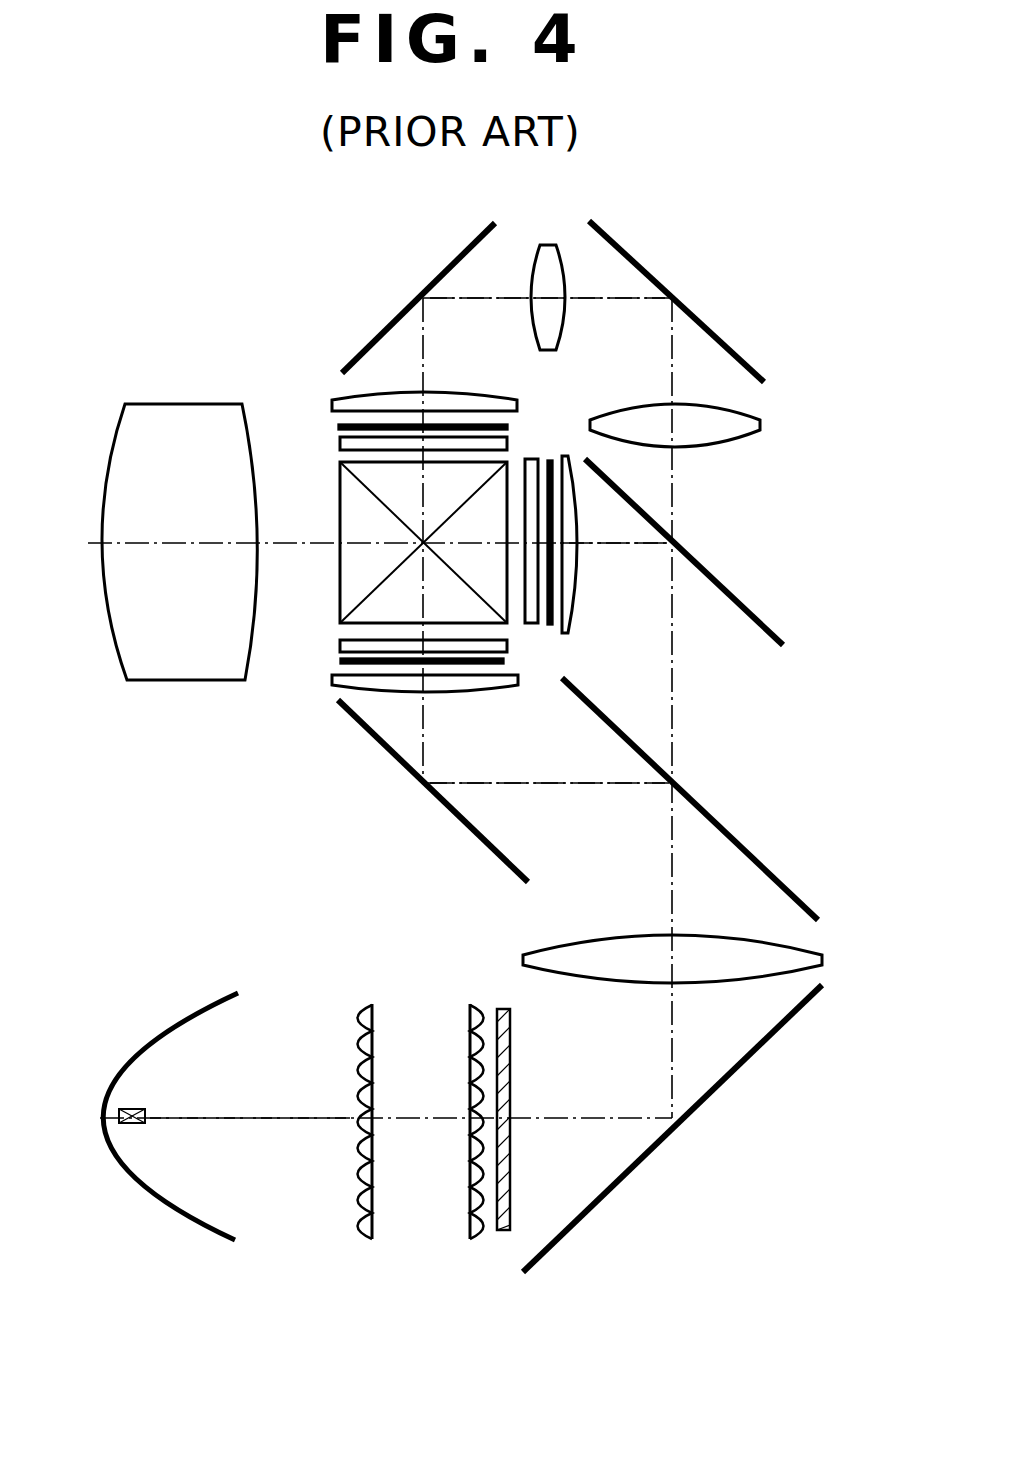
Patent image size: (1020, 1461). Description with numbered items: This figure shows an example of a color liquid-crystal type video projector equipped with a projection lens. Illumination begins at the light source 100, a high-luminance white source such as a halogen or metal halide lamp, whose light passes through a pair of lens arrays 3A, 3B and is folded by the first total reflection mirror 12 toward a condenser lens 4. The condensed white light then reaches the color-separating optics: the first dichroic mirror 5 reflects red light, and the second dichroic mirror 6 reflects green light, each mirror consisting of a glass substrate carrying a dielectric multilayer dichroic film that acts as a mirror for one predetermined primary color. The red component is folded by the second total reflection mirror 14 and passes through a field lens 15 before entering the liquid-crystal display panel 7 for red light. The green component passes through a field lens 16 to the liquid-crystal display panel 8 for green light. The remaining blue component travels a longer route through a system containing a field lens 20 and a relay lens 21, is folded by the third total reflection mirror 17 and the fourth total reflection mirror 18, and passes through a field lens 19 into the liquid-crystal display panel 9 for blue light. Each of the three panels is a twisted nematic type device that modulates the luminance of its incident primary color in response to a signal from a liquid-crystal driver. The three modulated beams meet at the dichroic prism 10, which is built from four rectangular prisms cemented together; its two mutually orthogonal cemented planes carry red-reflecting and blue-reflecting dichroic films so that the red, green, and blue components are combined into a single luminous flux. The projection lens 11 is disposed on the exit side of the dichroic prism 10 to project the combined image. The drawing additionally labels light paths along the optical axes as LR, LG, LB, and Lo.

The light source 100 is at (190, 993).
The lens array 3A is at (356, 1240).
The lens array 3B is at (470, 1240).
The first total reflection mirror 12 is at (750, 1056).
The condenser lens 4 is at (742, 944).
The first dichroic mirror 5 is at (744, 842).
The second total reflection mirror 14 is at (375, 736).
The field lens 15 is at (478, 694).
The liquid-crystal display panel 7 is at (344, 662).
The dichroic prism 10 is at (340, 498).
The liquid-crystal display panel 9 is at (344, 426).
The field lens 19 is at (466, 394).
The fourth total reflection mirror 18 is at (456, 257).
The relay lens 21 is at (546, 245).
The third total reflection mirror 17 is at (645, 266).
The field lens 20 is at (762, 426).
The second dichroic mirror 6 is at (746, 603).
The liquid-crystal display panel 8 is at (550, 462).
The field lens 16 is at (580, 612).
The projection lens 11 is at (178, 416).
The red light beam LR is at (497, 302).
The green light beam LG is at (598, 548).
The blue light beam LB is at (586, 786).
The source light beam Lo is at (242, 1122).